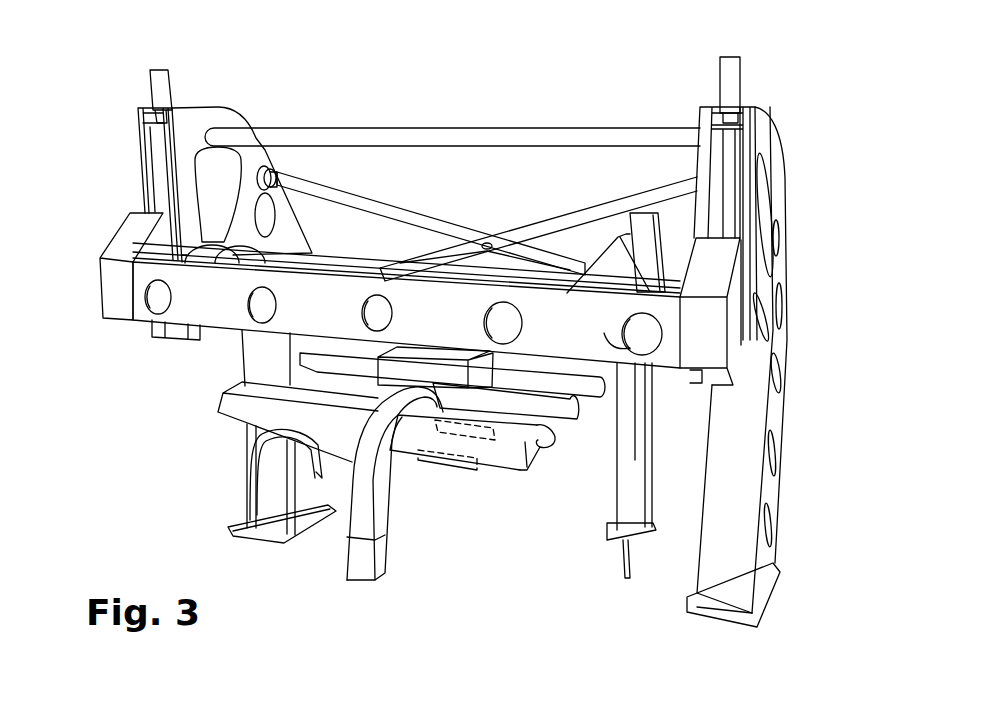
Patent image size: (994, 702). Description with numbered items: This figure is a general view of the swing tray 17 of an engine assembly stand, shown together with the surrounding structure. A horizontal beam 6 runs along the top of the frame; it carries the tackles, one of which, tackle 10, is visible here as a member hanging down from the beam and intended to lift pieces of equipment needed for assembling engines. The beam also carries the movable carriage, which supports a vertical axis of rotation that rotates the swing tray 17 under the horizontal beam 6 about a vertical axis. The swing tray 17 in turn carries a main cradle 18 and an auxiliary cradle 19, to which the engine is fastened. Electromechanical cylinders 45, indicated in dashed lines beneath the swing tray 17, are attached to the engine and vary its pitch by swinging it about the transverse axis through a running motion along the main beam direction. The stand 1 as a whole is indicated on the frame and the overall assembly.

The machine frame 1 is at (310, 215).
The horizontal beam 6 is at (378, 248).
The tackle 10 is at (612, 565).
The swing tray 17 is at (214, 390).
The main cradle 18 is at (323, 560).
The auxiliary cradle 19 is at (237, 476).
The electromechanical cylinders 45 is at (495, 440).